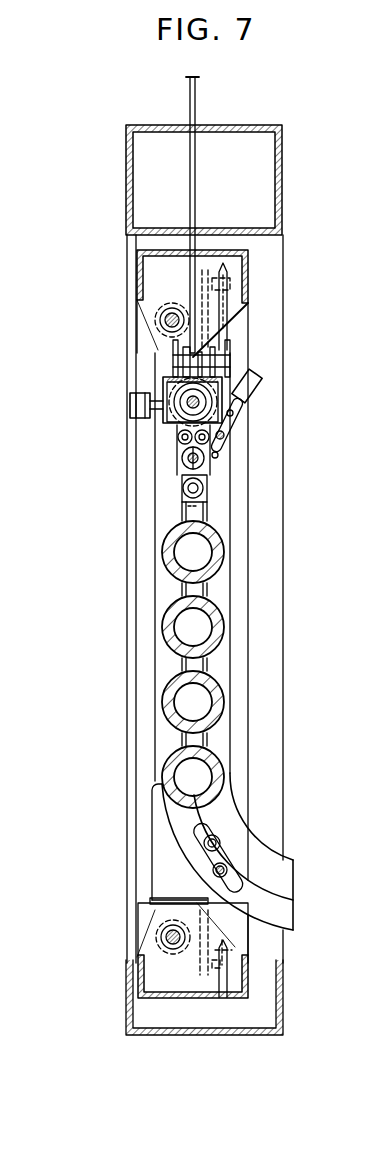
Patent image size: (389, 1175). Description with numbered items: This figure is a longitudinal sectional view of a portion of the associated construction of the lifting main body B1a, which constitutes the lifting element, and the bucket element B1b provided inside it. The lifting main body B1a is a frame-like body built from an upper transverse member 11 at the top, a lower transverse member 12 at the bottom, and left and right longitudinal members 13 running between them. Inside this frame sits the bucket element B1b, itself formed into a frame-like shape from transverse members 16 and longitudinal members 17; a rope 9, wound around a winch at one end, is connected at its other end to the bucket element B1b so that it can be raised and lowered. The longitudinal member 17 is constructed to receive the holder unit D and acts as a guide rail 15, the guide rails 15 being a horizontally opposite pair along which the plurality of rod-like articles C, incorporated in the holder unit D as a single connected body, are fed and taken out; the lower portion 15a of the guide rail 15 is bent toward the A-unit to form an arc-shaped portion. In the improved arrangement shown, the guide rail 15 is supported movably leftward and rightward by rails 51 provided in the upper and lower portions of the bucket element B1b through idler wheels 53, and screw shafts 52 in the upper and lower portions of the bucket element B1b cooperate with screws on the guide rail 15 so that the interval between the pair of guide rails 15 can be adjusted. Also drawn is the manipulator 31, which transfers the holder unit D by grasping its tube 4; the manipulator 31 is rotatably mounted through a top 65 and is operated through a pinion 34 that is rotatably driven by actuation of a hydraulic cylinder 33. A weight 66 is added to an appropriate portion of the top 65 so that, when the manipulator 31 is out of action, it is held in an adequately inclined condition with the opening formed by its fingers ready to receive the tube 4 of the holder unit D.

The rope 9 is at (196, 99).
The lifting main body B1a is at (233, 156).
The upper transverse member 11 is at (284, 167).
The transverse member 16 is at (222, 252).
The bucket element B1b is at (142, 274).
The idler wheel 53 is at (227, 272).
The screw shaft 52 is at (160, 322).
The rail 51 is at (228, 330).
The tube 4 is at (165, 388).
The top 65 is at (256, 375).
The weight 66 is at (130, 405).
The hydraulic cylinder 33 is at (250, 402).
The pinion 34 is at (181, 452).
The manipulator 31 is at (182, 492).
The longitudinal member 17 is at (150, 588).
The holder unit D is at (217, 591).
The rod-like article C is at (162, 640).
The guide rail 15 is at (230, 683).
The longitudinal member 13 is at (128, 803).
The lower portion of the guide rail 15a is at (285, 862).
The lower transverse member 12 is at (262, 1036).